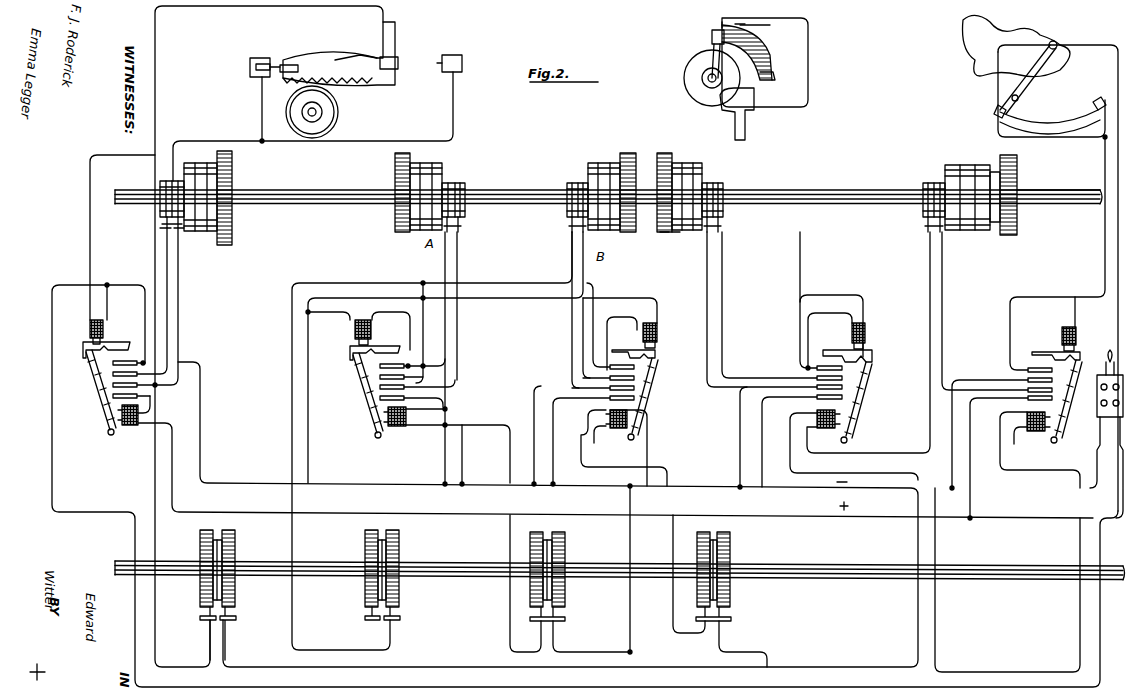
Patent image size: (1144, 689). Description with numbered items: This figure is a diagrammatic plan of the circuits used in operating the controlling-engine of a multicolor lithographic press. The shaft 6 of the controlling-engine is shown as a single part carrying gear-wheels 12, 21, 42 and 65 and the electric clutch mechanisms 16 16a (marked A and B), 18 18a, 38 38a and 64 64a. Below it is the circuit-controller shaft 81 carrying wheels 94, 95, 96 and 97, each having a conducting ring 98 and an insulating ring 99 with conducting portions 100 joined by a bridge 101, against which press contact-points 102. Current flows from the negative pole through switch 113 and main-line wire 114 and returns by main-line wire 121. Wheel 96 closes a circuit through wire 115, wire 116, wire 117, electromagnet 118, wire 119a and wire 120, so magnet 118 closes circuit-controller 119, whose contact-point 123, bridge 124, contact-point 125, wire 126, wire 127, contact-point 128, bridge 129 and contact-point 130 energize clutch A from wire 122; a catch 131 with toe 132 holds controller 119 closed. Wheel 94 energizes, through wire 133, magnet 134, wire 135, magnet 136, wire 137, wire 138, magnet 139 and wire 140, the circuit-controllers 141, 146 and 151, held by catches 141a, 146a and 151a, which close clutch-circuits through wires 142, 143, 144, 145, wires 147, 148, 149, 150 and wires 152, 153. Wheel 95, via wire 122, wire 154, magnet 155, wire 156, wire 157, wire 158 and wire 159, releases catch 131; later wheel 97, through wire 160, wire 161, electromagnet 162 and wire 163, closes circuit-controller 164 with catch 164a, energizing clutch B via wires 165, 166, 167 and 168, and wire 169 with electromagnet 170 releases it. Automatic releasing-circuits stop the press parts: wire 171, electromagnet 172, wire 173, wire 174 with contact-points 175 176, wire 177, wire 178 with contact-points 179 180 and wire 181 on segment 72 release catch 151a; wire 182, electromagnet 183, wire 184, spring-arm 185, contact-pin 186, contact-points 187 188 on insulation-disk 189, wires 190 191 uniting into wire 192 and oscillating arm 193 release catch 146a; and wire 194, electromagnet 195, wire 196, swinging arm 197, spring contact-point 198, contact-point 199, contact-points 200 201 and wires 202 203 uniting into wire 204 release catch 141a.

The shaft 6 is at (520, 190).
The gear-wheel 12 is at (395, 168).
The clutch mechanism 16 is at (450, 182).
The clutch mechanism 16a is at (418, 165).
The clutch mechanism 18 is at (962, 165).
The clutch mechanism 18a is at (996, 170).
The gear-wheel 21 is at (1017, 180).
The clutch mechanism 38 is at (702, 172).
The clutch mechanism 38a is at (672, 162).
The gear-wheel 42 is at (668, 240).
The clutch mechanism 64 is at (178, 181).
The clutch mechanism 64a is at (220, 162).
The gear-wheel 65 is at (217, 178).
The segment 72 is at (339, 54).
The circuit-controller shaft 81 is at (446, 560).
The circuit-controller wheel 94 is at (237, 545).
The circuit-controller wheel 95 is at (394, 571).
The circuit-controller wheel 96 is at (566, 548).
The circuit-controller wheel 97 is at (731, 548).
The ring 98 is at (227, 532).
The ring 99 is at (206, 531).
The conducting portion 100 is at (200, 594).
The bridge 101 is at (236, 594).
The contact-point 102 is at (200, 618).
The switch 113 is at (1122, 372).
The main-line wire 114 is at (200, 398).
The wire 115 is at (630, 597).
The wire 116 is at (586, 648).
The wire 117 is at (510, 627).
The electromagnet 118 is at (398, 427).
The circuit-controller 119 is at (372, 398).
The wire 119a is at (426, 426).
The wire 120 is at (445, 458).
The main-line wire 121 is at (172, 496).
The wire 122 is at (463, 457).
The contact-point 123 is at (412, 356).
The bridge 124 is at (380, 377).
The contact-point 125 is at (380, 386).
The wire 126 is at (458, 348).
The wire 127 is at (458, 244).
The contact-point 128 is at (417, 385).
The bridge 129 is at (368, 412).
The contact-point 130 is at (375, 436).
The catch 131 is at (380, 347).
The toe 132 is at (350, 349).
The wire 133 is at (145, 321).
The magnet 134 is at (1036, 431).
The wire 135 is at (1000, 450).
The magnet 136 is at (824, 430).
The wire 137 is at (790, 460).
The wire 138 is at (170, 661).
The magnet 139 is at (128, 426).
The wire 140 is at (615, 457).
The circuit-controller 141 is at (1064, 410).
The catch 141a is at (1085, 352).
The wire 142 is at (952, 412).
The wire 143 is at (942, 327).
The wire 144 is at (930, 273).
The wire 145 is at (972, 430).
The circuit-controller 146 is at (858, 394).
The catch 146a is at (872, 358).
The wire 147 is at (740, 427).
The wire 148 is at (724, 283).
The wire 149 is at (707, 310).
The wire 150 is at (762, 410).
The circuit-controller 151 is at (96, 395).
The catch 151a is at (83, 346).
The wire 152 is at (169, 329).
The wire 153 is at (180, 288).
The wire 154 is at (392, 325).
The magnet 155 is at (364, 321).
The wire 156 is at (444, 357).
The wire 157 is at (532, 300).
The wire 158 is at (392, 283).
The wire 159 is at (447, 318).
The wire 160 is at (723, 645).
The wire 161 is at (673, 600).
The electromagnet 162 is at (616, 428).
The wire 163 is at (582, 440).
The circuit-controller 164 is at (648, 396).
The catch 164a is at (653, 355).
The wire 165 is at (534, 387).
The wire 166 is at (594, 280).
The wire 167 is at (572, 250).
The wire 168 is at (556, 425).
The wire 169 is at (608, 318).
The electromagnet 170 is at (657, 330).
The wire 171 is at (107, 296).
The electromagnet 172 is at (90, 329).
The wire 173 is at (90, 213).
The wire 174 is at (262, 97).
The contact-point 175 is at (276, 64).
The contact-point 176 is at (285, 64).
The wire 177 is at (342, 58).
The wire 178 is at (454, 92).
The contact-point 179 is at (442, 70).
The contact-point 180 is at (398, 64).
The wire 181 is at (386, 18).
The wire 182 is at (829, 341).
The electromagnet 183 is at (865, 330).
The wire 184 is at (826, 296).
The spring-arm 185 is at (712, 36).
The contact-pin 186 is at (778, 16).
The contact-point 187 is at (734, 22).
The contact-point 188 is at (775, 64).
The insulation-disk 189 is at (752, 52).
The wire 190 is at (808, 26).
The wire 191 is at (774, 80).
The wire 192 is at (808, 114).
The oscillating arm 193 is at (684, 72).
The wire 194 is at (1022, 300).
The electromagnet 195 is at (1076, 332).
The wire 196 is at (1118, 252).
The swinging arm 197 is at (1036, 78).
The spring contact-point 198 is at (998, 104).
The contact-point 199 is at (1020, 108).
The contact-point 200 is at (1050, 123).
The contact-point 201 is at (1095, 101).
The wire 202 is at (1054, 138).
The wire 203 is at (1092, 129).
The wire 204 is at (1105, 225).